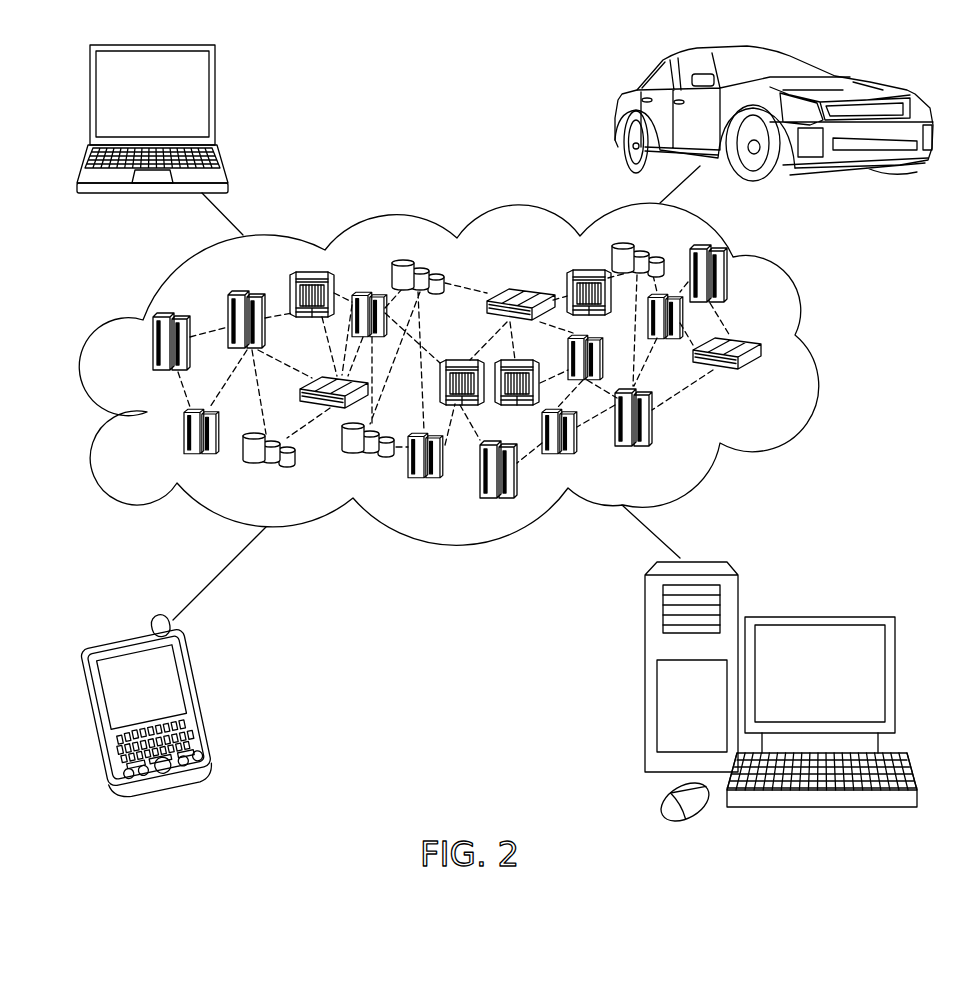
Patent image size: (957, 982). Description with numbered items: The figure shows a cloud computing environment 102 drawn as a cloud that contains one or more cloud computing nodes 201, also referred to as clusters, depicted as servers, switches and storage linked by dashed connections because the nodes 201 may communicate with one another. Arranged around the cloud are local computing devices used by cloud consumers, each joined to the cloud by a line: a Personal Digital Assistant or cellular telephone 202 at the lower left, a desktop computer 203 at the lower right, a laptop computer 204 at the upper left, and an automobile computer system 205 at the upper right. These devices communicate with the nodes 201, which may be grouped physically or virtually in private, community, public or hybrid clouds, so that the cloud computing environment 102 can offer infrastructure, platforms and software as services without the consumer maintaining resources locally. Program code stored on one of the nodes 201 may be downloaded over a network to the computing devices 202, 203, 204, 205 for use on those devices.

The cloud computing environment 102 is at (817, 350).
The cloud computing nodes 201 is at (767, 378).
The Personal Digital Assistant (PDA) or cellular telephone 202 is at (207, 698).
The desktop computer 203 is at (817, 615).
The laptop computer 204 is at (217, 98).
The automobile computer system 205 is at (613, 116).